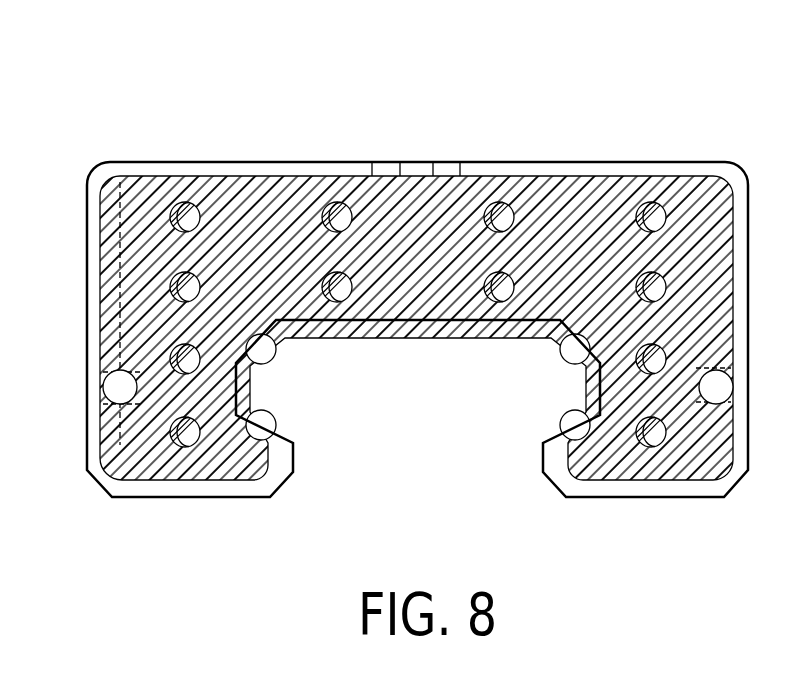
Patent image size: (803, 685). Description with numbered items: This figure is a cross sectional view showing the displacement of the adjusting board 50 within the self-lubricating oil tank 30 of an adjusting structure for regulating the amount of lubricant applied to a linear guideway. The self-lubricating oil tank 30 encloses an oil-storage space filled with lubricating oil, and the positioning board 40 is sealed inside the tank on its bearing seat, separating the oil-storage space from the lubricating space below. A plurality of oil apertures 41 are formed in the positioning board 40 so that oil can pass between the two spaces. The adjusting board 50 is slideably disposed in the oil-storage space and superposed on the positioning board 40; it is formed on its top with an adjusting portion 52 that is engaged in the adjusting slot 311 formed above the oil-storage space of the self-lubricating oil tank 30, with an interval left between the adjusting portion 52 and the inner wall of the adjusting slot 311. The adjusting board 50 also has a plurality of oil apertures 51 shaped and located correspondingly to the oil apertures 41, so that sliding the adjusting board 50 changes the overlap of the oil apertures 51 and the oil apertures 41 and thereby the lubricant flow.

The self-lubricating oil tank 30 is at (135, 172).
The adjusting slot 311 is at (470, 210).
The positioning board 40 is at (448, 172).
The oil apertures 41 is at (505, 205).
The adjusting board 50 is at (250, 218).
The oil apertures 51 is at (333, 207).
The adjusting portion 52 is at (415, 172).